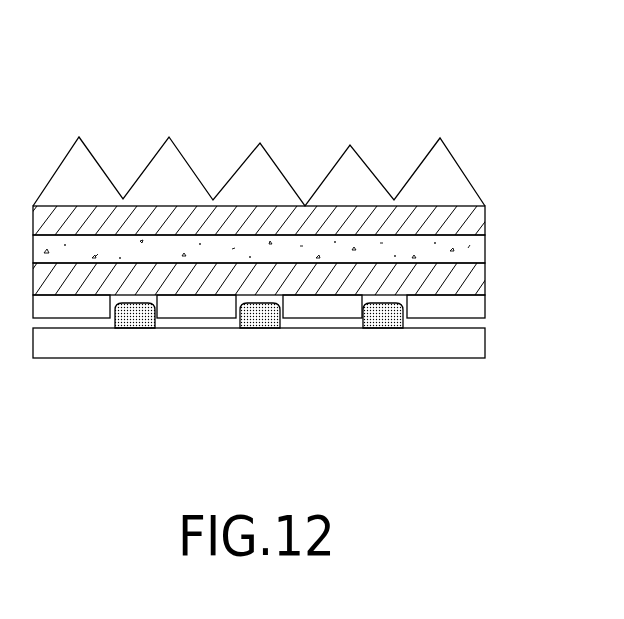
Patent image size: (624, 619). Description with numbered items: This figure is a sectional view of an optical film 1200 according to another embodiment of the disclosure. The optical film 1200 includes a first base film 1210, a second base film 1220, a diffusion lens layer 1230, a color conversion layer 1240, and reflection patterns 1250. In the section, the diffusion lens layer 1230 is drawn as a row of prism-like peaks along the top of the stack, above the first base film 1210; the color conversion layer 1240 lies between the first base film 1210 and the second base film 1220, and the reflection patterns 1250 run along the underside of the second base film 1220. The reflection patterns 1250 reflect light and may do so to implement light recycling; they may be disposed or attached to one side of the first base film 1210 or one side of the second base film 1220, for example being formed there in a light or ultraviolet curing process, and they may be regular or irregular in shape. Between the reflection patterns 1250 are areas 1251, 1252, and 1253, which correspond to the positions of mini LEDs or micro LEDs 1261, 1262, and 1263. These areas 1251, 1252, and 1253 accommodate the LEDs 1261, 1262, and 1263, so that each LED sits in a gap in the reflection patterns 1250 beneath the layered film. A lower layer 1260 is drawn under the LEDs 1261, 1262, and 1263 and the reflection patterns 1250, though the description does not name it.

The optical film 1200 is at (285, 31).
The diffusion lens layer 1230 is at (485, 120).
The first base film 1210 is at (485, 223).
The color conversion layer 1240 is at (485, 249).
The second base film 1220 is at (485, 283).
The reflection patterns 1250 is at (485, 312).
The area between the reflection patterns 1251 is at (158, 298).
The area between the reflection patterns 1252 is at (283, 297).
The area between the reflection patterns 1253 is at (407, 297).
The mini LED 1261 is at (132, 328).
The mini LED 1262 is at (260, 328).
The mini LED 1263 is at (383, 328).
The substrate 1260 is at (485, 347).